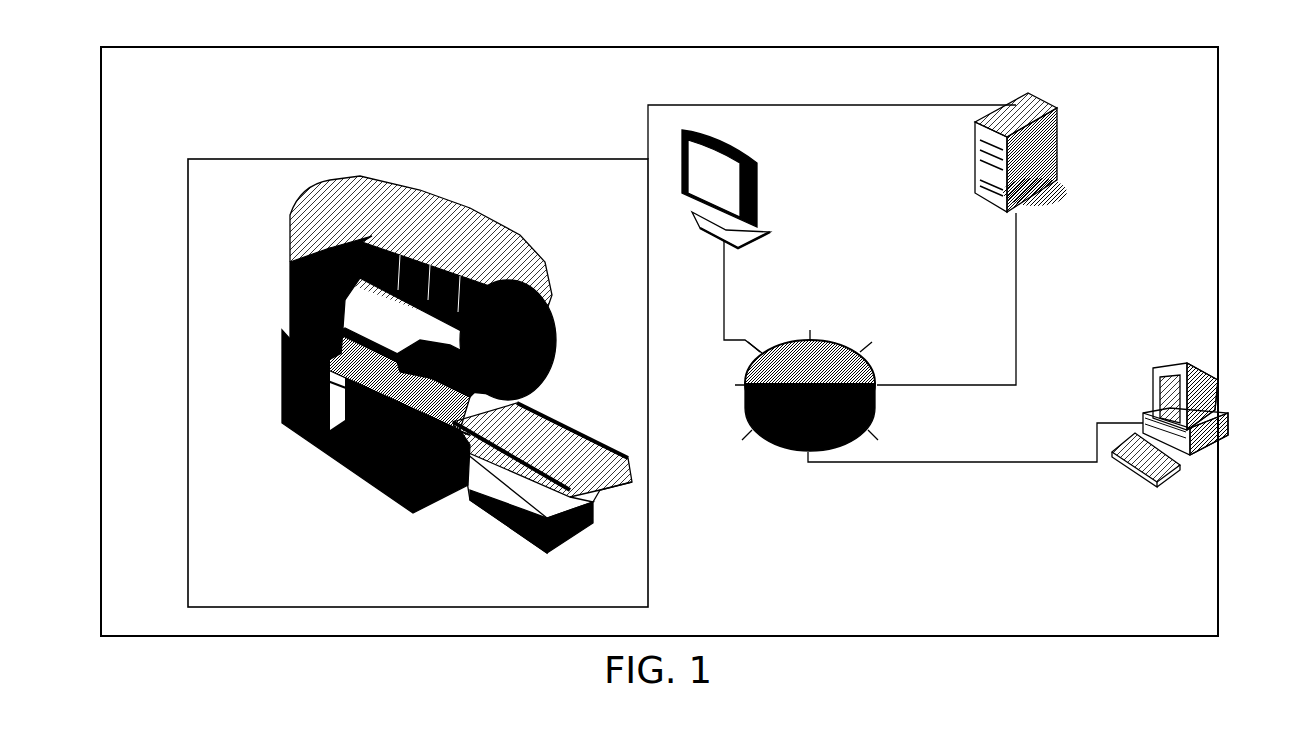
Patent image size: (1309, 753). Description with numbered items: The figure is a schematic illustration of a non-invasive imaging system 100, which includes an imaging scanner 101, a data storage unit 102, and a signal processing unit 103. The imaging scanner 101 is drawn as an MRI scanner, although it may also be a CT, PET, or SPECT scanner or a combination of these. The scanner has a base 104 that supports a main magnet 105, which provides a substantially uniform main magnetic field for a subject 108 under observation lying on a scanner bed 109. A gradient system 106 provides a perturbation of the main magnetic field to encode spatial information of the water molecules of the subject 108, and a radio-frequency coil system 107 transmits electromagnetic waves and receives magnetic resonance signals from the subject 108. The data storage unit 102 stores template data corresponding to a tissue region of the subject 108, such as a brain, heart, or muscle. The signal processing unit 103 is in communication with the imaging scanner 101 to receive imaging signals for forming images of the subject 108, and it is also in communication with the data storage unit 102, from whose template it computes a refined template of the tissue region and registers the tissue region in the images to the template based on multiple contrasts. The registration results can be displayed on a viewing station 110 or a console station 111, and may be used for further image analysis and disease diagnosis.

The non-invasive imaging system 100 is at (1222, 190).
The imaging scanner 101 is at (513, 159).
The data storage unit 102 is at (838, 345).
The signal processing unit 103 is at (1016, 96).
The base 104 is at (390, 497).
The main magnet 105 is at (377, 382).
The gradient system 106 is at (348, 337).
The radio-frequency coil system 107 is at (388, 302).
The subject 108 is at (482, 383).
The scanner bed 109 is at (603, 468).
The viewing station 110 is at (753, 162).
The console station 111 is at (1207, 378).